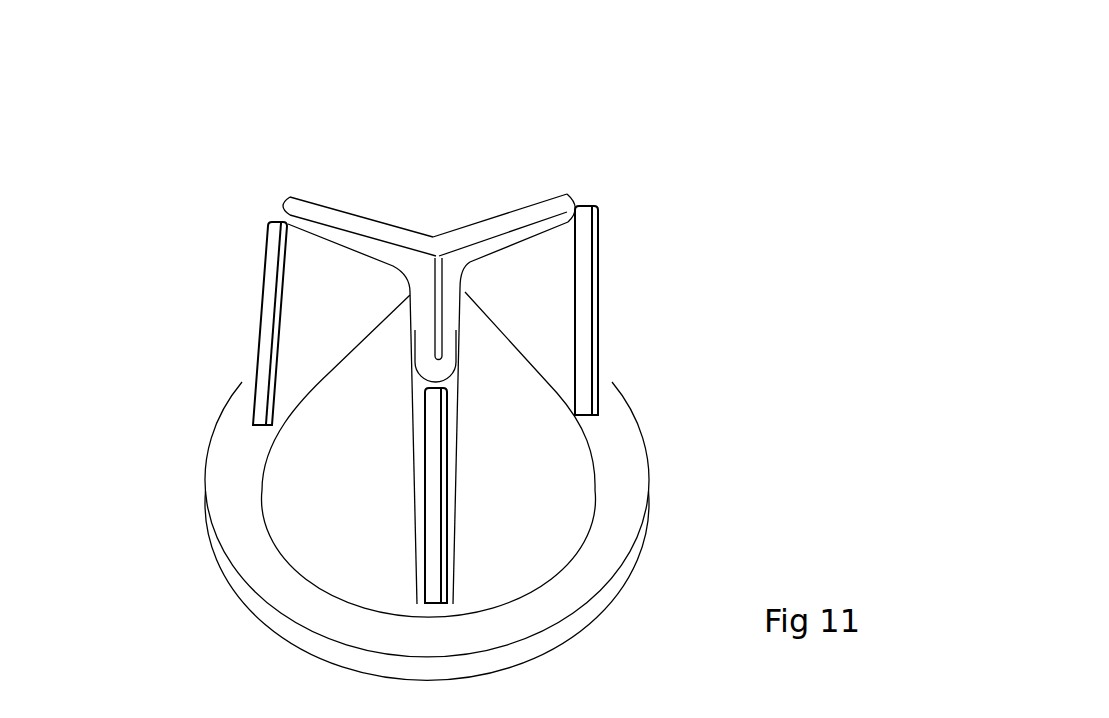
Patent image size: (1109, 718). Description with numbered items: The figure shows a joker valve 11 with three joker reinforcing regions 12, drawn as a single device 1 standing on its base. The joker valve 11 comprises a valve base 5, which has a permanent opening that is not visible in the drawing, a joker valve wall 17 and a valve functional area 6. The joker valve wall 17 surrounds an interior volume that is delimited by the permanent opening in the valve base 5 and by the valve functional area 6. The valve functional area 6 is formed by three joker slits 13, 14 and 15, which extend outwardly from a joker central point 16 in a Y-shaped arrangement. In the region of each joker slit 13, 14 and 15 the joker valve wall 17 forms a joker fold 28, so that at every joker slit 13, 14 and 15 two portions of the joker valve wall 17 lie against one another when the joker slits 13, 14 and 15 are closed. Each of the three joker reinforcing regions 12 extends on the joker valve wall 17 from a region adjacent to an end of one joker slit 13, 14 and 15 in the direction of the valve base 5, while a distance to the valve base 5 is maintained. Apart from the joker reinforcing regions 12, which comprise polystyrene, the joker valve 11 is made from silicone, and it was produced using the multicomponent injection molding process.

The device 1 is at (777, 298).
The valve base 5 is at (613, 506).
The valve functional area 6 is at (378, 173).
The joker valve 11 is at (313, 133).
The joker reinforcing region 12 is at (272, 298).
The joker slit 13 is at (393, 241).
The joker slit 14 is at (540, 210).
The joker slit 15 is at (440, 327).
The joker central point 16 is at (450, 250).
The joker valve wall 17 is at (557, 375).
The joker fold 28 is at (325, 214).